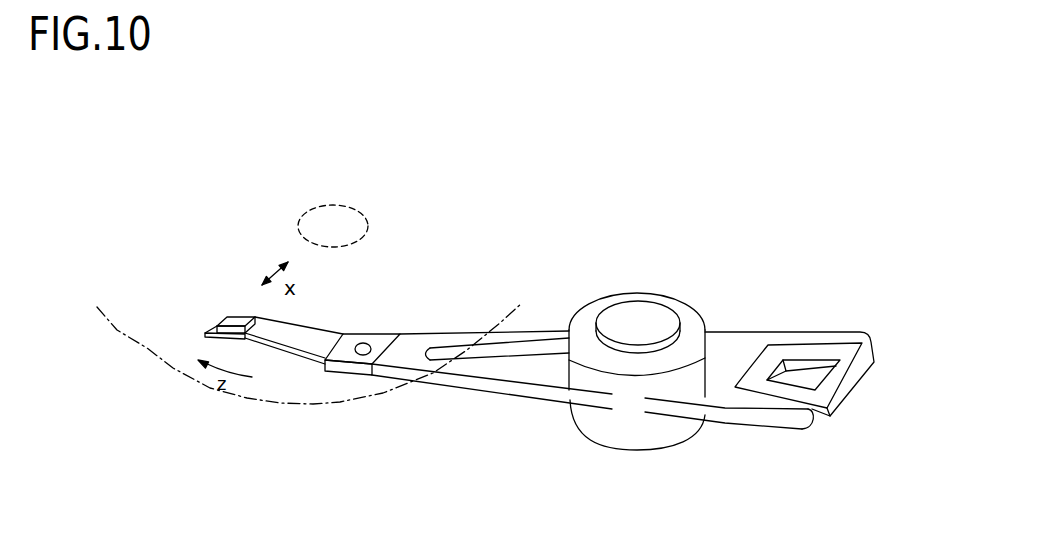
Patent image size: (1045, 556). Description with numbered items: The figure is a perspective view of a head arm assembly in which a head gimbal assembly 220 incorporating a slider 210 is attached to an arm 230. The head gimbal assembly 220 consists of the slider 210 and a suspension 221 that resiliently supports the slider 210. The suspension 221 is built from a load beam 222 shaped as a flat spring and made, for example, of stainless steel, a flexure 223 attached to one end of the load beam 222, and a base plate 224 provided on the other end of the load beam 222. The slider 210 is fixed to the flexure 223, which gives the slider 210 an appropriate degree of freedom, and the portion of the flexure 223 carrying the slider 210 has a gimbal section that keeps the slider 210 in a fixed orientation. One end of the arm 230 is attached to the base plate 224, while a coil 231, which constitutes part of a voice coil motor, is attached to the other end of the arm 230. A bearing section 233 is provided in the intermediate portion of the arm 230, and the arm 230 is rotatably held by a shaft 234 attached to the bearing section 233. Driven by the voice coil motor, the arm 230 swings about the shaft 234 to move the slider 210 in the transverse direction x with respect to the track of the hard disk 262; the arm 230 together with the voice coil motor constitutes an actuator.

The slider 210 is at (237, 323).
The head gimbal assembly 220 is at (353, 352).
The suspension 221 is at (316, 290).
The load beam 222 is at (334, 336).
The flexure 223 is at (212, 328).
The base plate 224 is at (389, 334).
The arm 230 is at (462, 382).
The coil 231 is at (857, 392).
The bearing section 233 is at (588, 310).
The shaft 234 is at (650, 313).
The hard disk 262 is at (245, 398).